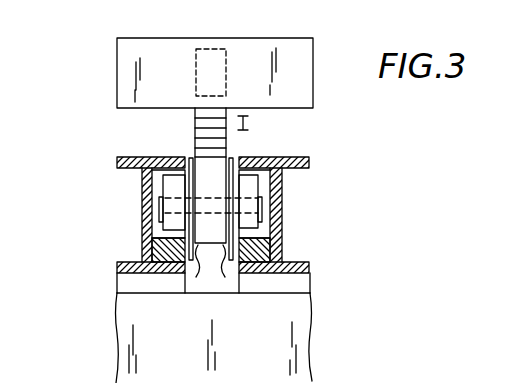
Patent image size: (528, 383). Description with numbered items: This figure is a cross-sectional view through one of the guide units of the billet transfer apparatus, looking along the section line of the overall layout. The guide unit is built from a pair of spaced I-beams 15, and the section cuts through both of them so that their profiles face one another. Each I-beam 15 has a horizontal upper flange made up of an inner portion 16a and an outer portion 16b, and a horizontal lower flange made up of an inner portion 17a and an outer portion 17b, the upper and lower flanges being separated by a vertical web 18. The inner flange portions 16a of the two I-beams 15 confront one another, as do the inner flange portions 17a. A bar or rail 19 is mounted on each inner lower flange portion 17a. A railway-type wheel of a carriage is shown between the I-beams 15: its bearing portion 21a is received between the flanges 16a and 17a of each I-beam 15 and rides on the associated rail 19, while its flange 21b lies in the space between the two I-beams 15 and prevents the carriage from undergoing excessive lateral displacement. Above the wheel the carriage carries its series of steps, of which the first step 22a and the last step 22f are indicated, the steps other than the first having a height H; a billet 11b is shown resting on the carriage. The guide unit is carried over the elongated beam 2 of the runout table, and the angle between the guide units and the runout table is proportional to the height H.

The elongated beam 2 is at (311, 320).
The billet 11b is at (117, 63).
The I-beam 15 is at (112, 262).
The inner portion of upper flange 16a is at (165, 157).
The outer portion of upper flange 16b is at (119, 160).
The inner portion of lower flange 17a is at (165, 273).
The outer portion of lower flange 17b is at (128, 277).
The vertical web 18 is at (141, 207).
The rail 19 is at (152, 232).
The bearing portion of wheel 21a is at (153, 183).
The flange of wheel 21b is at (213, 268).
The step 22a is at (223, 102).
The step 22f is at (192, 157).
The height of step H is at (250, 123).